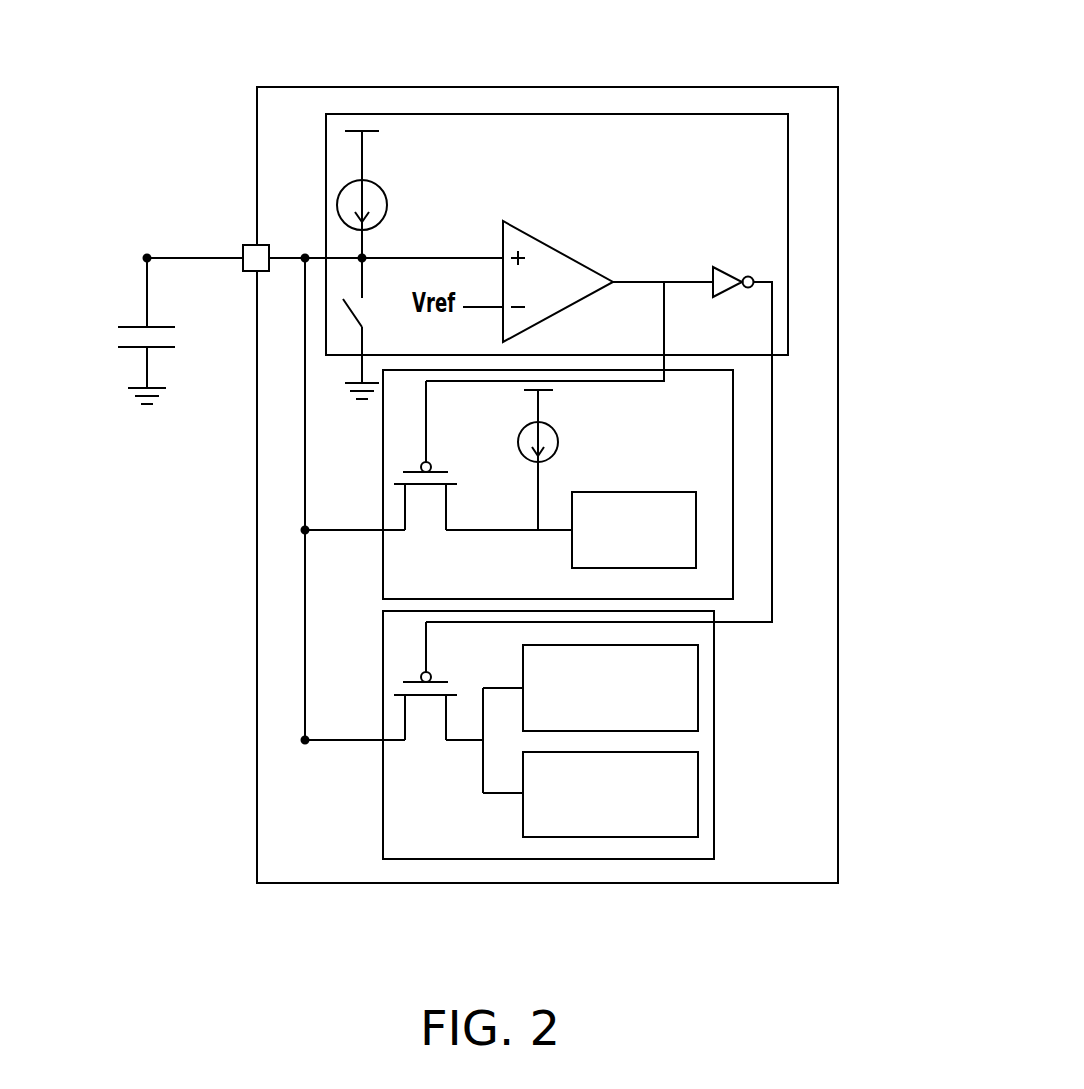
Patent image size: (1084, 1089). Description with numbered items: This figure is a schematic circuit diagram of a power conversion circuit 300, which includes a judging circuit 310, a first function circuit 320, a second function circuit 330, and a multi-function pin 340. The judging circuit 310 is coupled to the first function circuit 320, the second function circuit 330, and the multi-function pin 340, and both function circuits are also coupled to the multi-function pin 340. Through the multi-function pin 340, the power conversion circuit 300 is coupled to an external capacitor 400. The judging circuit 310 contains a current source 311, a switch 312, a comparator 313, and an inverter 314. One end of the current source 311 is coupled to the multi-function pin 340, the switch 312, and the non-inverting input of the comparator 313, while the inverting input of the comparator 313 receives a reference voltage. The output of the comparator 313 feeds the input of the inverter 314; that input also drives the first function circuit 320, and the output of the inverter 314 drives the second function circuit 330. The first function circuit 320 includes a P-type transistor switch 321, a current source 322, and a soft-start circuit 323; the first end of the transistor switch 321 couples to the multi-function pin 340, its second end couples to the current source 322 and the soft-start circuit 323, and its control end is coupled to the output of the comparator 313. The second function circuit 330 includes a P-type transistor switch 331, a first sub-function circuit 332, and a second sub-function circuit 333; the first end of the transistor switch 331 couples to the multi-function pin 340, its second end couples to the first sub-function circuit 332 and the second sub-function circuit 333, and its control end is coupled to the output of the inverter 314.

The power conversion circuit 300 is at (720, 87).
The judging circuit 310 is at (788, 220).
The current source 311 is at (387, 200).
The switch 312 is at (366, 305).
The comparator 313 is at (563, 232).
The inverter 314 is at (727, 267).
The first function circuit 320 is at (772, 502).
The transistor switch 321 is at (426, 514).
The current source 322 is at (558, 442).
The soft-start circuit 323 is at (628, 492).
The second function circuit 330 is at (714, 748).
The transistor switch 331 is at (426, 724).
The first sub-function circuit 332 is at (698, 680).
The second sub-function circuit 333 is at (698, 792).
The multi-function pin 340 is at (247, 245).
The capacitor 400 is at (125, 337).